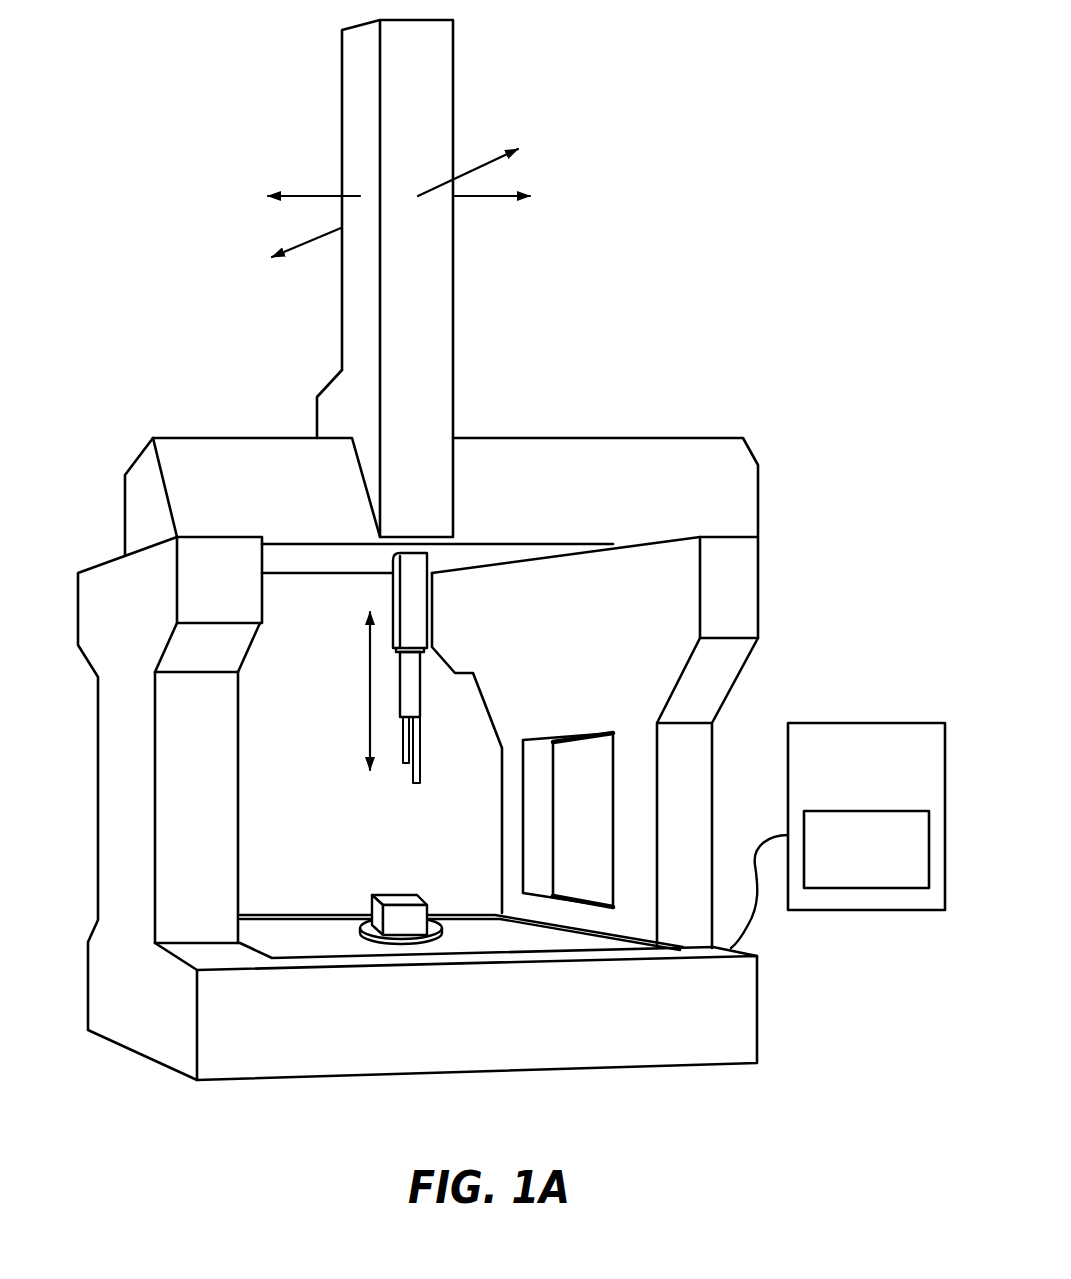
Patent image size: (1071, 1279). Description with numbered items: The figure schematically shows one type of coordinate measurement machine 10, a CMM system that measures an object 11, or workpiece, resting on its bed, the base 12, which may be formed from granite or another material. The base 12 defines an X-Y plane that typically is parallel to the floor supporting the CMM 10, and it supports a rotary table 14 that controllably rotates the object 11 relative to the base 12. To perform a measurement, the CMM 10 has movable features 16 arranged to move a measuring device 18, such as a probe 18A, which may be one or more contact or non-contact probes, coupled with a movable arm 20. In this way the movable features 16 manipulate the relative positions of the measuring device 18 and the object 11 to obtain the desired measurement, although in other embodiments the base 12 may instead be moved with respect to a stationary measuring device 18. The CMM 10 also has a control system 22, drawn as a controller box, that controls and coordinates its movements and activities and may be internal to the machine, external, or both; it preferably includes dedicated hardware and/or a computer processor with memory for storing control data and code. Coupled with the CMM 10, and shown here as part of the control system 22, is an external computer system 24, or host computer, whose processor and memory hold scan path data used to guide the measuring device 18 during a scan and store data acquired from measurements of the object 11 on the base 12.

The coordinate measurement machine 10 is at (684, 354).
The object 11 is at (408, 892).
The base 12 is at (779, 1017).
The rotary table 14 is at (357, 918).
The movable features 16 is at (524, 436).
The measuring device 18 is at (432, 708).
The probe 18A is at (402, 789).
The movable arm 20 is at (417, 597).
The control system 22 is at (878, 791).
The external computer system 24 is at (878, 875).